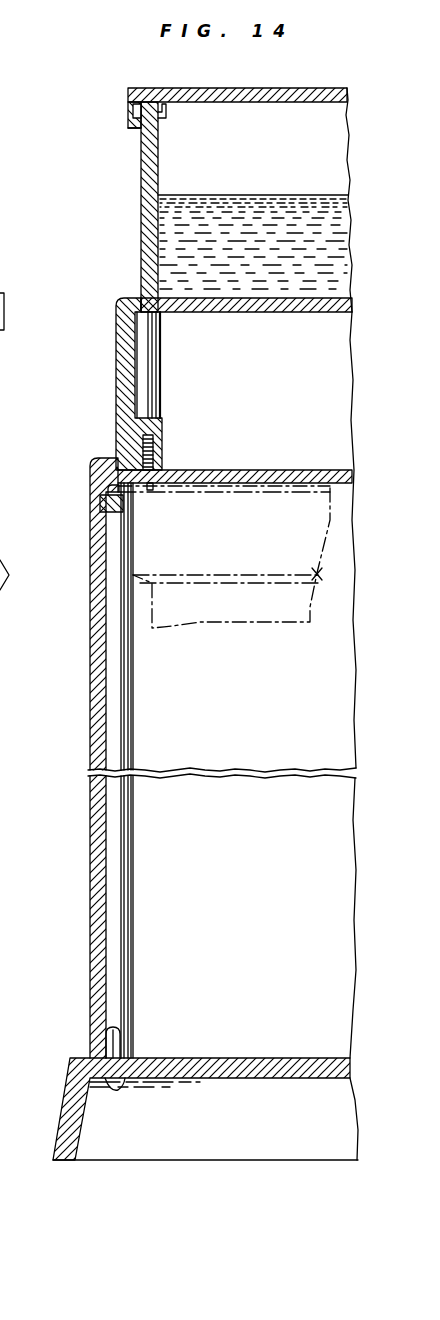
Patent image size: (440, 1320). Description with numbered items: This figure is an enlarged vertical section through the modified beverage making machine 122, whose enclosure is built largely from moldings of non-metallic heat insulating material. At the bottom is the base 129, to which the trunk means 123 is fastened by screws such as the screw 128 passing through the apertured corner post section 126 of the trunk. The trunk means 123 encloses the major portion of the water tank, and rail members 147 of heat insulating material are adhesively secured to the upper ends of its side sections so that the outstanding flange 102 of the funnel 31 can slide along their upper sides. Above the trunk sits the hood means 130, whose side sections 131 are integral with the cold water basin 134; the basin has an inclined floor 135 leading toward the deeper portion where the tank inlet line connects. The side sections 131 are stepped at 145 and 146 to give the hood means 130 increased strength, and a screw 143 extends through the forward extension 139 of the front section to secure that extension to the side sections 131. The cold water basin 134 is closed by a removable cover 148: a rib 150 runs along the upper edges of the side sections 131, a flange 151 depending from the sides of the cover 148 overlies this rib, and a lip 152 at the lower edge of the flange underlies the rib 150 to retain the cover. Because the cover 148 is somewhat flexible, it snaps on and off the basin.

The beverage making machine 122 is at (77, 97).
The removable cover 148 is at (236, 88).
The flange 151 is at (129, 101).
The rib 150 is at (136, 113).
The lip 152 is at (136, 125).
The hood means 130 is at (120, 191).
The side sections 131 is at (140, 265).
The cold water basin 134 is at (311, 127).
The inclined floor 135 is at (268, 306).
The step 145 is at (138, 296).
The screw 143 is at (154, 455).
The forward extension 139 is at (239, 470).
The trunk means 123 is at (80, 865).
The step 146 is at (113, 458).
The rail members 147 is at (99, 503).
The outstanding flange 102 is at (150, 492).
The funnel 31 is at (320, 580).
The corner post section 126 is at (125, 981).
The base 129 is at (68, 1086).
The screw 128 is at (110, 1090).